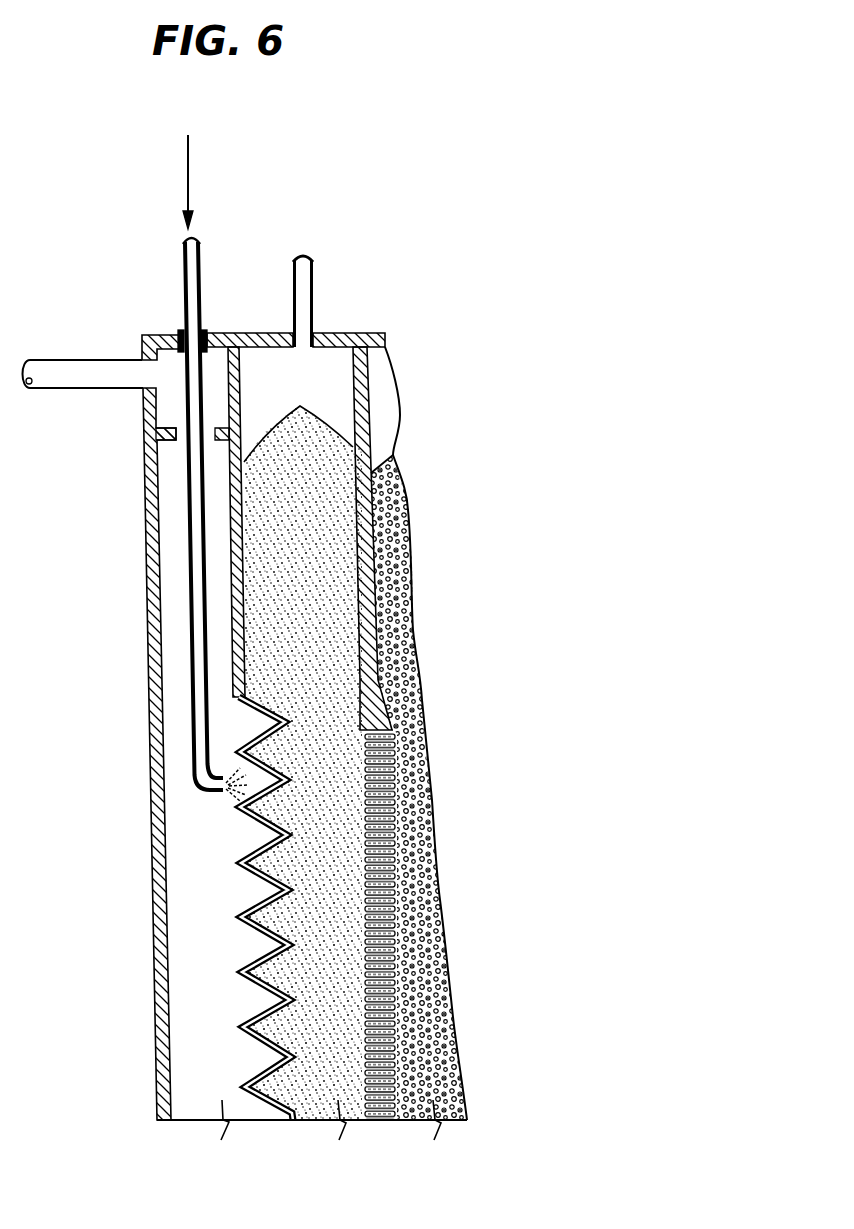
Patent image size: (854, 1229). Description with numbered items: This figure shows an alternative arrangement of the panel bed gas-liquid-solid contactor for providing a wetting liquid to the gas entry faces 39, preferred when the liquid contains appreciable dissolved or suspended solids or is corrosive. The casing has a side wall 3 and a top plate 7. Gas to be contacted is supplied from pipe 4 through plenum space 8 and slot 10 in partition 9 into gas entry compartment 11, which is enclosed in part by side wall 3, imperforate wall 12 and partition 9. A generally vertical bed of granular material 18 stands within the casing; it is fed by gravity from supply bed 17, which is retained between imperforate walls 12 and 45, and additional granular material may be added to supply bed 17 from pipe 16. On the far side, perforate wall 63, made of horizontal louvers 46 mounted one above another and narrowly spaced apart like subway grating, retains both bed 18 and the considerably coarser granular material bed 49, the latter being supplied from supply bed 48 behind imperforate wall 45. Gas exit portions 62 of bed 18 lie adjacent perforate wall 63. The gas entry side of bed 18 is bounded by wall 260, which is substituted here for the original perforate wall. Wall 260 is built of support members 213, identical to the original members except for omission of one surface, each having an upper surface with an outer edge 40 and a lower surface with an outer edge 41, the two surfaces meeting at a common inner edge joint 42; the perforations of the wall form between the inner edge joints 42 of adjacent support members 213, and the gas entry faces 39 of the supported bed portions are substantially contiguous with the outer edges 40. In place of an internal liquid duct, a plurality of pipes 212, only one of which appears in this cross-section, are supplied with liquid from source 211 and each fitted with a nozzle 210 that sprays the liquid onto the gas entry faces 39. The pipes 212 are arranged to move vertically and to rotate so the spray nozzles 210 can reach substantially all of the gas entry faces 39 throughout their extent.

The side wall 3 is at (148, 636).
The pipe 4 is at (58, 388).
The top plate 7 is at (260, 332).
The plenum space 8 is at (179, 407).
The partition 9 is at (172, 444).
The slot 10 is at (180, 443).
The gas entry compartment 11 is at (218, 1085).
The imperforate wall 12 is at (244, 400).
The pipe 16 is at (314, 277).
The supply bed 17 is at (305, 491).
The granular material bed 18 is at (333, 863).
The gas entry faces 39 is at (253, 852).
The outer edge 40 is at (247, 968).
The outer edge 41 is at (262, 1010).
The inner edge joint 42 is at (311, 1012).
The imperforate wall 45 is at (355, 390).
The louvers 46 is at (393, 850).
The supply bed 48 is at (396, 550).
The granular material bed 49 is at (427, 1060).
The gas exit portions 62 is at (352, 973).
The perforate wall 63 is at (396, 934).
The nozzle 210 is at (216, 796).
The source 211 is at (186, 172).
The pipe 212 is at (182, 281).
The support members 213 is at (265, 878).
The wall 260 is at (248, 937).